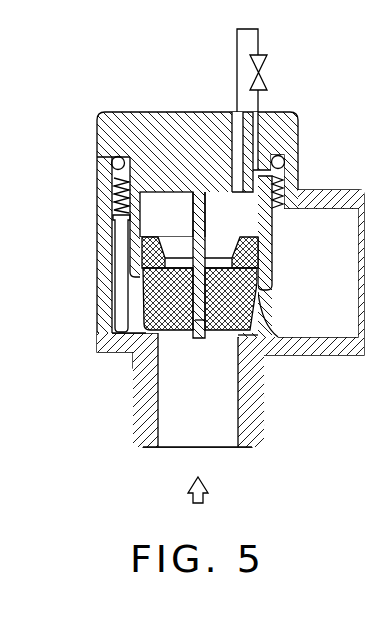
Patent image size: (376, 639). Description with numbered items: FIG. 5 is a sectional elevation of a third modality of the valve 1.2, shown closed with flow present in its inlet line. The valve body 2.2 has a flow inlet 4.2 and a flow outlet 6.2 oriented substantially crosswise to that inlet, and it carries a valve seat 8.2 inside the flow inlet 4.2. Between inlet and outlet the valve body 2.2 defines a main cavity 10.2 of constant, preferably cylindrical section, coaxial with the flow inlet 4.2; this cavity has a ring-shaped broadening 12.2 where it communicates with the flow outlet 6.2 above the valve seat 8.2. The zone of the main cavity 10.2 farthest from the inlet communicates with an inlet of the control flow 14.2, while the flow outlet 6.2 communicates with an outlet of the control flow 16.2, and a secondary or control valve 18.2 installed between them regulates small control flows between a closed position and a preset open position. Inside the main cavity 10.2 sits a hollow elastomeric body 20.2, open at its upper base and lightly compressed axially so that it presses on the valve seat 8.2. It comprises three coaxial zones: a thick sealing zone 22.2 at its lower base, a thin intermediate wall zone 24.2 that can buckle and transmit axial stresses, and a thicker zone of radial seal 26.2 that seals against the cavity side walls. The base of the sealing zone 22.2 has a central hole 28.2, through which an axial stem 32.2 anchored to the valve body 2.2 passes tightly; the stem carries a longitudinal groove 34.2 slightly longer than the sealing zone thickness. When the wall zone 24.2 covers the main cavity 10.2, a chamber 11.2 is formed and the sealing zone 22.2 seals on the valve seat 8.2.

The valve 1.2 is at (307, 140).
The valve body 2.2 is at (307, 185).
The flow inlet 4.2 is at (180, 435).
The flow outlet 6.2 is at (283, 238).
The valve seat 8.2 is at (155, 322).
The main cavity 10.2 is at (260, 293).
The chamber 11.2 is at (170, 207).
The ring-shaped broadening 12.2 is at (132, 308).
The inlet of the control flow 14.2 is at (237, 127).
The outlet of the control flow 16.2 is at (260, 133).
The secondary or control valve 18.2 is at (265, 70).
The elastomeric body 20.2 is at (145, 292).
The sealing zone 22.2 is at (231, 335).
The wall zone 24.2 is at (257, 265).
The zone of radial seal 26.2 is at (142, 250).
The central hole 28.2 is at (197, 322).
The axial stem 32.2 is at (233, 230).
The longitudinal groove 34.2 is at (97, 353).